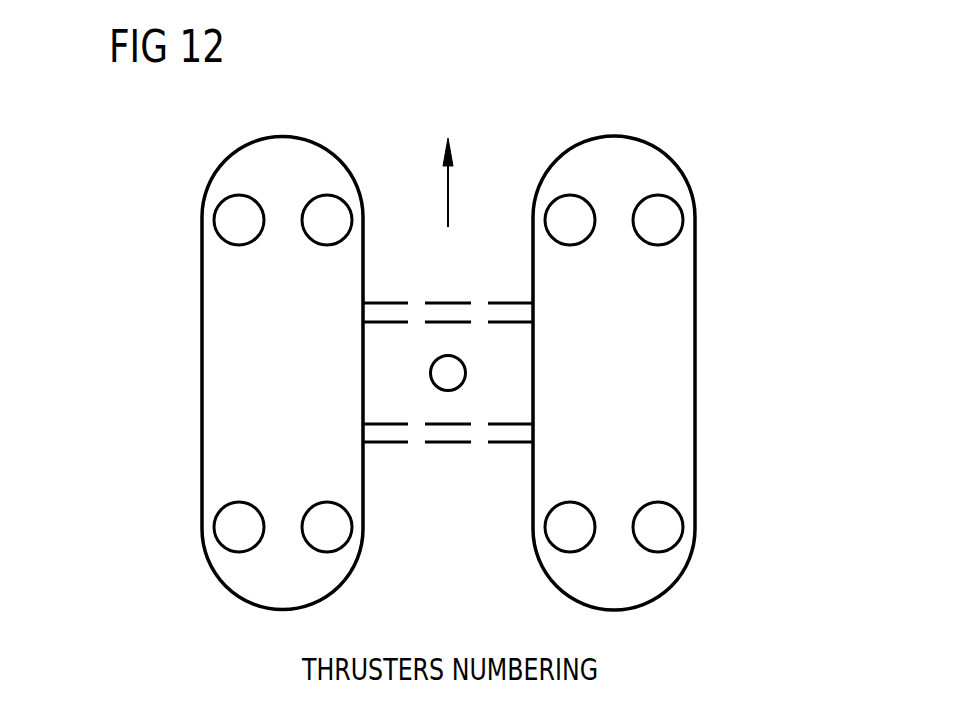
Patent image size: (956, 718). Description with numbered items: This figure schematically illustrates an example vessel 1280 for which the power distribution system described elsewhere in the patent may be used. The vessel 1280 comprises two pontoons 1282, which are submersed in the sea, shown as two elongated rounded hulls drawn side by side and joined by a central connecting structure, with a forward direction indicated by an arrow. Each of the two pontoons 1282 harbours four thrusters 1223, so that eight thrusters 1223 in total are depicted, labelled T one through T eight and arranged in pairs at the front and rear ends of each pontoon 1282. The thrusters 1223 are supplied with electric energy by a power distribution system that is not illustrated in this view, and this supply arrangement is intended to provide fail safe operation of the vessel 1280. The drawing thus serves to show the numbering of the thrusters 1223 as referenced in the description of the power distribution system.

The vessel 1280 is at (693, 118).
The pontoons 1282 is at (202, 382).
The thrusters 1223 is at (239, 245).